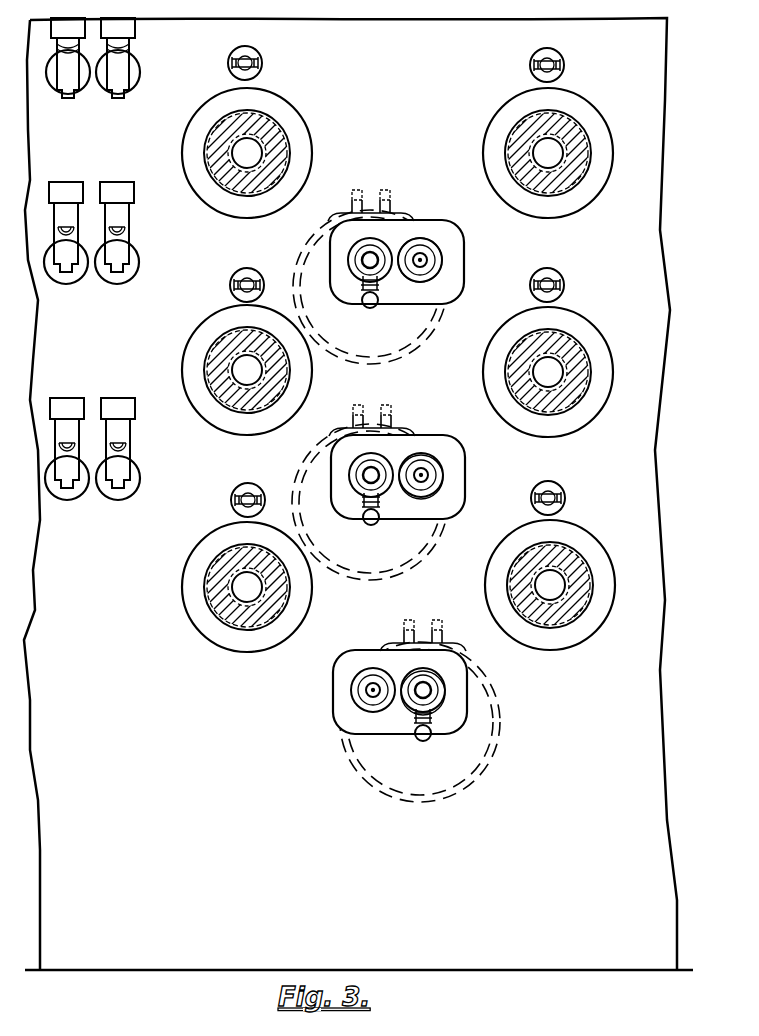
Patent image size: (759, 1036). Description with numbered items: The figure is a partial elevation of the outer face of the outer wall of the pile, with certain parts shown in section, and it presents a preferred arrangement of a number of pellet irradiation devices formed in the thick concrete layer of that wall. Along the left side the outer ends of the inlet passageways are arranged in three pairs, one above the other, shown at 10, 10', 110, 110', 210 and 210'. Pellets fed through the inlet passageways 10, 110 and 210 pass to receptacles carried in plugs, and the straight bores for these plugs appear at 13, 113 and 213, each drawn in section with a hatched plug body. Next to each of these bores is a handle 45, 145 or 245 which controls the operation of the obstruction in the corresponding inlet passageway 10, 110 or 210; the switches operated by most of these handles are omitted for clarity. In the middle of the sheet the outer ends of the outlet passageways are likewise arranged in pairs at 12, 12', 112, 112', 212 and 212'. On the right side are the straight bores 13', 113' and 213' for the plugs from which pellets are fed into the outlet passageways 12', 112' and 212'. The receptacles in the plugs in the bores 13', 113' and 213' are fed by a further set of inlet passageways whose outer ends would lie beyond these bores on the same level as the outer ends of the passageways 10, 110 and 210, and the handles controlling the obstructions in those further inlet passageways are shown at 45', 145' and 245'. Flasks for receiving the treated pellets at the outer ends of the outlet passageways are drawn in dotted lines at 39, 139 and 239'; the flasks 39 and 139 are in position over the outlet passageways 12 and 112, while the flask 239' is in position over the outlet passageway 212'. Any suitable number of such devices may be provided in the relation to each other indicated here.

The inlet passageway 10 is at (138, 58).
The inlet passageway 10' is at (63, 70).
The handle 45 is at (274, 58).
The handle 45' is at (576, 61).
The straight bore 13 is at (247, 153).
The straight bore 13' is at (548, 153).
The outlet passageway 12 is at (396, 244).
The outlet passageway 12' is at (441, 231).
The flask 39 is at (412, 333).
The inlet passageway 110 is at (150, 233).
The inlet passageway 110' is at (64, 247).
The handle 145 is at (256, 270).
The handle 145' is at (553, 270).
The straight bore 113 is at (247, 382).
The straight bore 113' is at (555, 372).
The outlet passageway 112 is at (397, 461).
The outlet passageway 112' is at (462, 462).
The flask 139 is at (418, 547).
The inlet passageway 210 is at (147, 449).
The inlet passageway 210' is at (72, 466).
The handle 245 is at (257, 486).
The handle 245' is at (570, 485).
The straight bore 213 is at (247, 601).
The straight bore 213' is at (550, 577).
The outlet passageway 212 is at (369, 680).
The outlet passageway 212' is at (481, 691).
The flask 239' is at (459, 722).